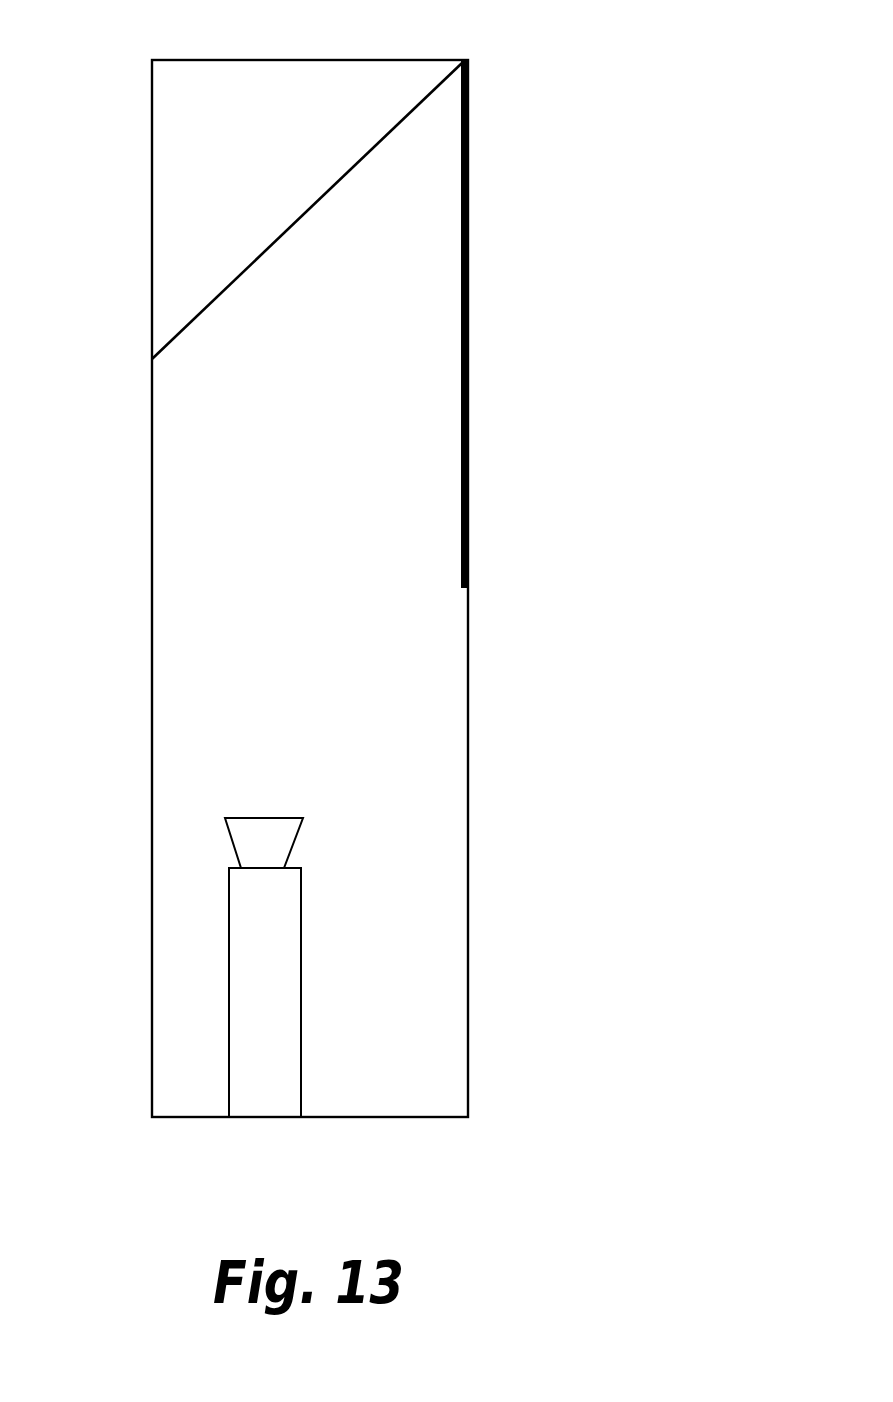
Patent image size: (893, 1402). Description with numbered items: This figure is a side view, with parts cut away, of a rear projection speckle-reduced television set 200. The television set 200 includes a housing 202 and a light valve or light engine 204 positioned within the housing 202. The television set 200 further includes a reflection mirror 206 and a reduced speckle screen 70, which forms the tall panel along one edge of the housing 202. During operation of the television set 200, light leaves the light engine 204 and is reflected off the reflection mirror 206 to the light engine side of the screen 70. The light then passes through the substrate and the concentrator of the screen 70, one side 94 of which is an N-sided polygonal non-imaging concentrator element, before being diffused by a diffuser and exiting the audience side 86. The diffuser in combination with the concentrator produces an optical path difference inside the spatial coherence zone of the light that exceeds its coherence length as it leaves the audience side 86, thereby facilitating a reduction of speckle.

The reduced speckle screen 70 is at (467, 150).
The audience side 86 is at (467, 230).
The side 94 is at (462, 338).
The rear projection speckle-reduced television set 200 is at (393, 588).
The housing 202 is at (467, 905).
The light valve or light engine 204 is at (308, 812).
The reflection mirror 206 is at (215, 300).